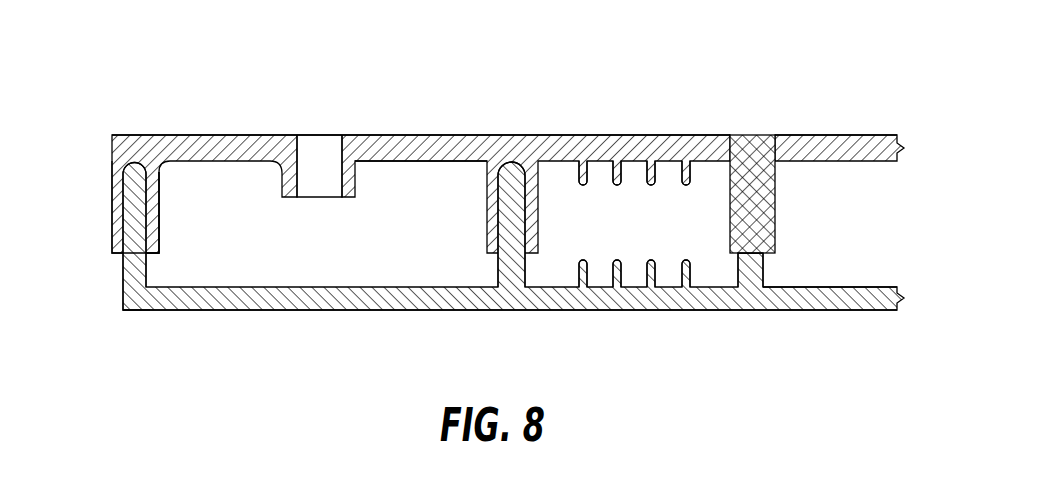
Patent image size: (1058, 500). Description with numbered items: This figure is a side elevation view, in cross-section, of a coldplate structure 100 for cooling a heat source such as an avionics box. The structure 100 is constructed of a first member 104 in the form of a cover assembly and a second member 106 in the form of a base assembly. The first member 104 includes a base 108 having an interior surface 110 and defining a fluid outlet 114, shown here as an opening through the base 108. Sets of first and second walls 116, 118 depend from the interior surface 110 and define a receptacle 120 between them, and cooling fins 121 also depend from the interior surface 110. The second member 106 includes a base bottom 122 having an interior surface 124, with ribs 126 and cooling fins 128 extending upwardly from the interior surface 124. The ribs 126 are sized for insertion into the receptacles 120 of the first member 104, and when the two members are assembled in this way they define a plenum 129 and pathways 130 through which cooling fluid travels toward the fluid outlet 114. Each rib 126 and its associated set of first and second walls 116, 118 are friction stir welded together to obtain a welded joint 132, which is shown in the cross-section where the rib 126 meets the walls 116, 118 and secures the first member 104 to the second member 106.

The structure 100 is at (479, 195).
The first member 104 is at (200, 127).
The second member 106 is at (220, 320).
The base 108 is at (248, 135).
The interior surface 110 is at (390, 161).
The fluid outlet 114 is at (330, 135).
The first wall 116 is at (112, 193).
The second wall 118 is at (160, 203).
The receptacle 120 is at (123, 290).
The cooling fins 121 is at (614, 176).
The base bottom 122 is at (845, 310).
The interior surface 124 is at (845, 288).
The ribs 126 is at (133, 256).
The cooling fins 128 is at (650, 275).
The plenum 129 is at (332, 247).
The pathways 130 is at (658, 236).
The welded joint 132 is at (776, 199).